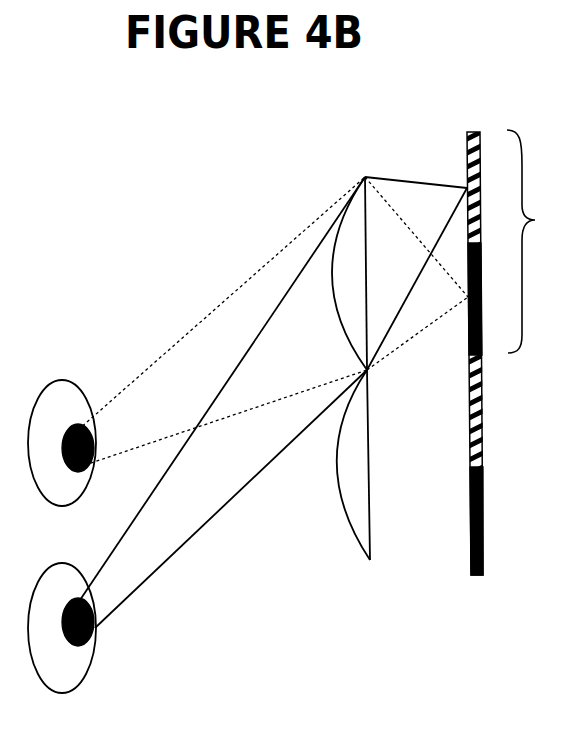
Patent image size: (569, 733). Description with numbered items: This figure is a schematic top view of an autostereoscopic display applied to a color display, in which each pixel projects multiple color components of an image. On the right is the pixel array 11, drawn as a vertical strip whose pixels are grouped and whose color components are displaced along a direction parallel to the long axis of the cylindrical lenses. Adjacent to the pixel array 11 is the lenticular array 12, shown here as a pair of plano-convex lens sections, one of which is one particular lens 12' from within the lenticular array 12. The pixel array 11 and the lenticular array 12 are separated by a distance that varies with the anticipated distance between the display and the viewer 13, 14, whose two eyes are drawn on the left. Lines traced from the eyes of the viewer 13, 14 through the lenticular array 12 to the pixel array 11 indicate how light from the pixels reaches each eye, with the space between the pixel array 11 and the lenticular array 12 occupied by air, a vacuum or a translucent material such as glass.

The pixel array 11 is at (488, 115).
The lenticular array 12 is at (369, 241).
The lens 12' is at (328, 450).
The viewer 13 is at (57, 380).
The viewer 14 is at (55, 566).